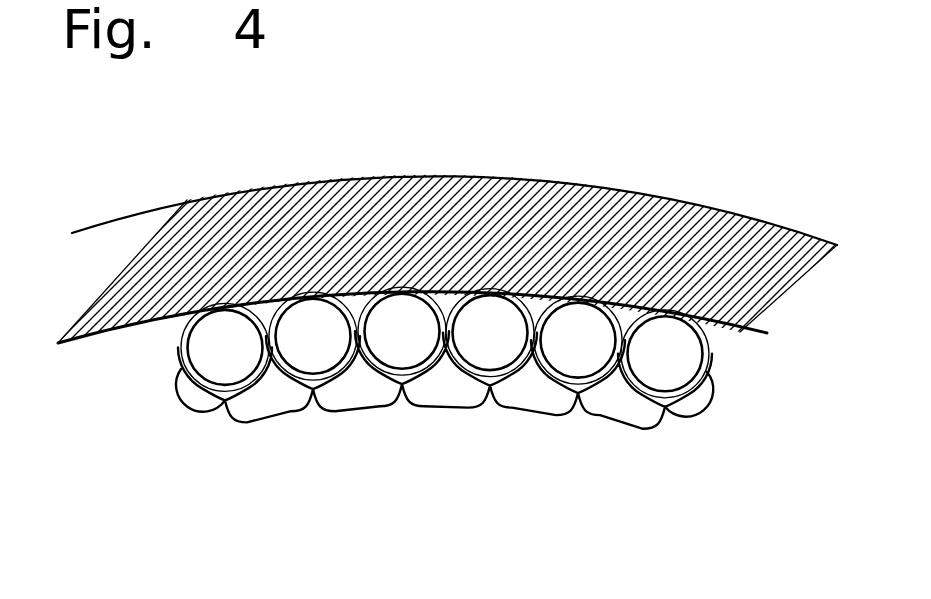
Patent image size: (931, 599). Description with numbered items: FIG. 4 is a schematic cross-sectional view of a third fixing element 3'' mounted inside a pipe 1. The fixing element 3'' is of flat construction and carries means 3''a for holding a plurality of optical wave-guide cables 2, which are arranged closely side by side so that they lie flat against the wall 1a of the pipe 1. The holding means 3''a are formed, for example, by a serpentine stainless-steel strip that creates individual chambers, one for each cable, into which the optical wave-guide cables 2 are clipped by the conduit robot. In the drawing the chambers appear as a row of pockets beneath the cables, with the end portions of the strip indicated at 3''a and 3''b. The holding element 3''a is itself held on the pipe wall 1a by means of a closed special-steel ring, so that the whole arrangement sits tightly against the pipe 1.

The pipe 1 is at (590, 228).
The wall of the pipe 1a is at (93, 335).
The optical wave-guide cables 2 is at (485, 335).
The fixing element 3'' is at (394, 415).
The holding means 3''a is at (254, 436).
The right end lobe of membrane 3''b is at (753, 394).